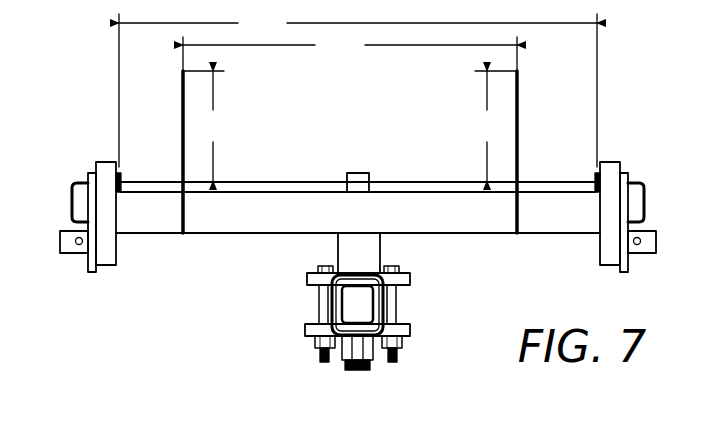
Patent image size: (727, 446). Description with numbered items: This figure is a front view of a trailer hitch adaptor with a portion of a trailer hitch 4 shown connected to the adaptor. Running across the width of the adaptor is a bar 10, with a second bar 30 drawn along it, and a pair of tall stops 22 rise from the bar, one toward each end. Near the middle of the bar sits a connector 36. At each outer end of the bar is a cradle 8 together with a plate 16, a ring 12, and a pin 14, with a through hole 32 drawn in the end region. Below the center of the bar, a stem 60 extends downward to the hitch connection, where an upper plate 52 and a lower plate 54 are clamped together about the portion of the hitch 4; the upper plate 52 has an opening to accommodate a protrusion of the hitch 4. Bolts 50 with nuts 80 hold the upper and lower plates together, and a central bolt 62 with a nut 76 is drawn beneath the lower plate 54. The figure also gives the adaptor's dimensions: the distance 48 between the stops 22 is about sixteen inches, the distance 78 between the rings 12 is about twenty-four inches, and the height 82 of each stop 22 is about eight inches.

The trailer hitch 4 is at (375, 341).
The cradle 8 is at (104, 162).
The bar 10 is at (452, 181).
The ring 12 is at (120, 175).
The pin 14 is at (60, 240).
The plate 16 is at (88, 268).
The stop 22 is at (183, 76).
The bar 30 is at (225, 226).
The through hole 32 is at (76, 238).
The connector 36 is at (358, 173).
The distance between stops 48 is at (326, 56).
The bolt 50 is at (318, 268).
The upper plate 52 is at (410, 282).
The lower plate 54 is at (307, 326).
The stem 60 is at (338, 238).
The bolt 62 is at (358, 370).
The nut 76 is at (373, 343).
The distance between rings 78 is at (248, 34).
The nut 80 is at (315, 346).
The height of stop 82 is at (200, 136).